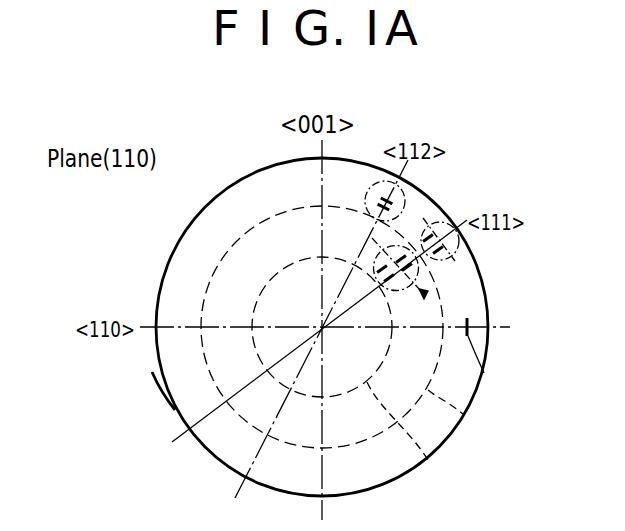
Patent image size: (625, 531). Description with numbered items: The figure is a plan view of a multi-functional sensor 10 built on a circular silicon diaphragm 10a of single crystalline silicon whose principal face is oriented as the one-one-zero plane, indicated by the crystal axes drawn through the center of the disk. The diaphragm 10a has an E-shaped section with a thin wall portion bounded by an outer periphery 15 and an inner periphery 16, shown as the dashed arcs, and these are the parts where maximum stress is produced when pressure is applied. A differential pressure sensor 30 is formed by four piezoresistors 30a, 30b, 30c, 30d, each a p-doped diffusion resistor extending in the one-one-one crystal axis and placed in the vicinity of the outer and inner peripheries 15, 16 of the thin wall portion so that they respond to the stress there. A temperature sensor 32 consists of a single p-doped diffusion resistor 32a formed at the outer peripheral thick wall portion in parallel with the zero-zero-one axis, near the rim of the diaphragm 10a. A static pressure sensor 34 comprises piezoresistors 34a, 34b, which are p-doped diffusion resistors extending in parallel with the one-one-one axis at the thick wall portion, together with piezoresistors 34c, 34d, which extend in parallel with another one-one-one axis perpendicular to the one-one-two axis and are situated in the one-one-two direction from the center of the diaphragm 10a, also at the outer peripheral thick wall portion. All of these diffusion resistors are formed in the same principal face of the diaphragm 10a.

The sensor 10 is at (170, 407).
The silicon diaphragm 10a is at (166, 372).
The outer periphery 15 is at (462, 418).
The inner periphery 16 is at (431, 463).
The differential pressure sensor 30 is at (486, 311).
The piezoresistor 30a is at (411, 250).
The piezoresistor 30b is at (425, 293).
The piezoresistor 30c is at (378, 260).
The piezoresistor 30d is at (394, 291).
The temperature sensor 32 is at (487, 329).
The diffusion resistor 32a is at (484, 373).
The static pressure sensor 34 is at (455, 256).
The piezoresistor 34a is at (427, 232).
The piezoresistor 34b is at (443, 248).
The piezoresistor 34c is at (400, 188).
The piezoresistor 34d is at (372, 190).